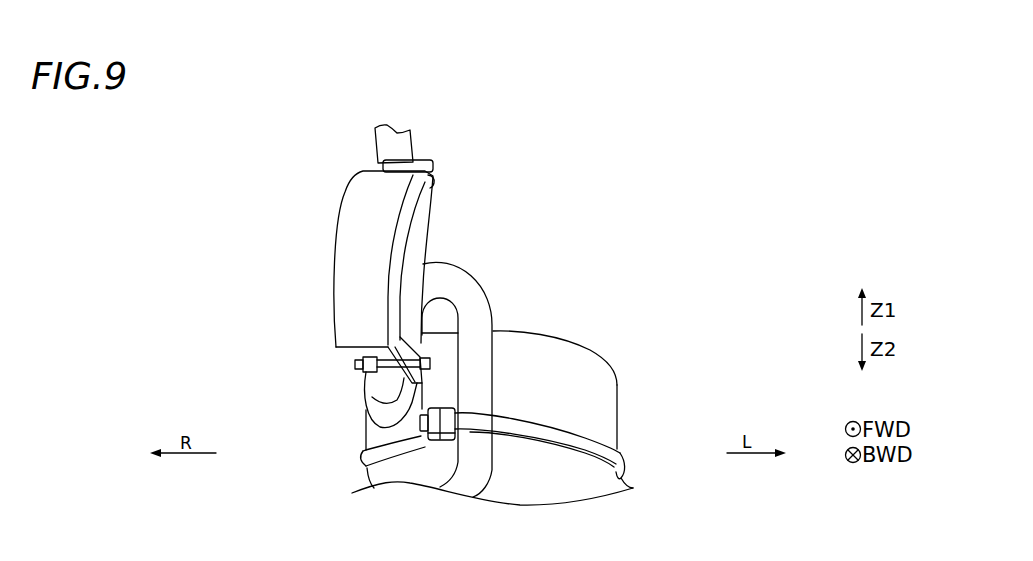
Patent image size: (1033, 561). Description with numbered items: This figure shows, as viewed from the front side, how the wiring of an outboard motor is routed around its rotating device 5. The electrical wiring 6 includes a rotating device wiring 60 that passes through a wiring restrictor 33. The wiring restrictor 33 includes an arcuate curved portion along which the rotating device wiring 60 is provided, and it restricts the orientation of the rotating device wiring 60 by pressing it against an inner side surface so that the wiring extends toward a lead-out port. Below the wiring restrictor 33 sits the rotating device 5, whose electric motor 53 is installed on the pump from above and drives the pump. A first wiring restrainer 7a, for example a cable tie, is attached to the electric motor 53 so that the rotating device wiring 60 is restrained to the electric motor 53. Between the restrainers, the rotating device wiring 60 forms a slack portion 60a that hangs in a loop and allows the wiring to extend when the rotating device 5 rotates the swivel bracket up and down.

The electrical wiring 6 is at (379, 107).
The rotating device wiring 60 is at (398, 138).
The wiring restrictor 33 is at (359, 193).
The slack portion 60a is at (463, 296).
The rotating device 5 is at (626, 361).
The electric motor 53 is at (605, 395).
The first wiring restrainer 7a is at (623, 448).